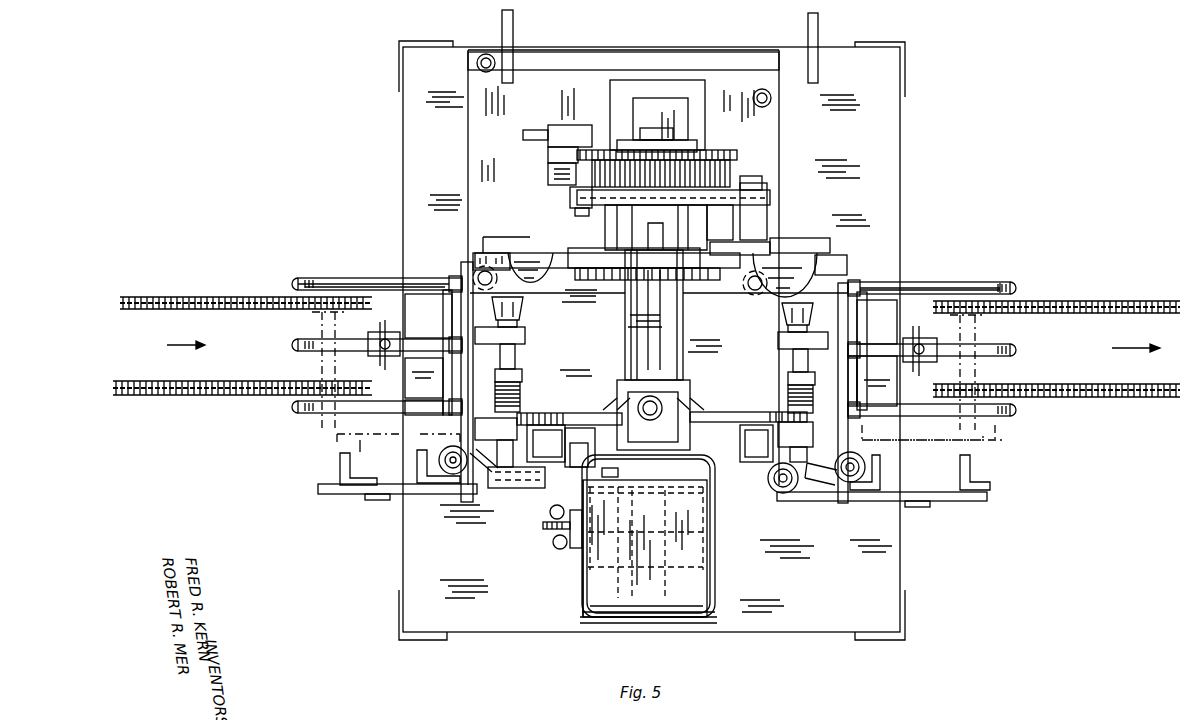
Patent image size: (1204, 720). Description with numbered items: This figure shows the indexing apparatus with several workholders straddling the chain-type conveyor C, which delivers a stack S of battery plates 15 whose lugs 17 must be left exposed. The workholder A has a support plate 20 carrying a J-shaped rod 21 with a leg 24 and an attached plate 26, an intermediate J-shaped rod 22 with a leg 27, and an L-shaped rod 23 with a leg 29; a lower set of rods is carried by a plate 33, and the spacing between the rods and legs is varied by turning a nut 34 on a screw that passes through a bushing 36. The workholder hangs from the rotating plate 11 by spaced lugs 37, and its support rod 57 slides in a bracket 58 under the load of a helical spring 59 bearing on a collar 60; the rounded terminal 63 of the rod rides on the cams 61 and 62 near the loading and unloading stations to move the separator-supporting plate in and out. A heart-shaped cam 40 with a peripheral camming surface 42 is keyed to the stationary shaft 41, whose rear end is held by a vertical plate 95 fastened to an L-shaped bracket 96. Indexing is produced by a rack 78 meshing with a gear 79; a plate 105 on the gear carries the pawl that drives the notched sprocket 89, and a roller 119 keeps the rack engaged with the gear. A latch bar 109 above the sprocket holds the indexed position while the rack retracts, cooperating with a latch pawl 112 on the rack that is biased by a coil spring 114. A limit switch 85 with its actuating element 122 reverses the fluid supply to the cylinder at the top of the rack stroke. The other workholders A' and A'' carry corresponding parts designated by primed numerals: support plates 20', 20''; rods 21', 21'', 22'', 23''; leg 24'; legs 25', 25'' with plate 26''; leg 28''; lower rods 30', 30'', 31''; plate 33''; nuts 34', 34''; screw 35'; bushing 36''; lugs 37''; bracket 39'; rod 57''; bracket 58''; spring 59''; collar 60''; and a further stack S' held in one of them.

The stationary shaft 41 is at (646, 106).
The L-shaped bracket 96 is at (672, 112).
The actuating element 122 is at (523, 132).
The limit switch 85 is at (590, 121).
The vertically extending plate 95 is at (722, 156).
The gear 79 is at (731, 168).
The rack 78 is at (548, 170).
The roller 119 is at (548, 178).
The coil spring 114 is at (570, 197).
The latch pawl 112 is at (577, 216).
The plate 105 is at (748, 176).
The latch bar 109 is at (770, 203).
The sprocket 89 is at (710, 208).
The cam 61 is at (540, 291).
The cam 62 is at (752, 284).
The rounded terminal 63 is at (522, 302).
The bracket 58 is at (519, 331).
The rod 57 is at (533, 353).
The collar 60 is at (530, 369).
The helical spring 59 is at (530, 394).
The lugs 37 is at (495, 427).
The support plate 20 is at (478, 382).
The plate 26 is at (497, 458).
The leg 24 is at (373, 269).
The rod 21 is at (437, 335).
The leg 27 is at (312, 352).
The leg 29 is at (366, 414).
The plate 33 is at (428, 316).
The intermediate rod 22 is at (424, 378).
The bushing 36 is at (398, 345).
The nut 34 is at (366, 348).
The rod 23 is at (424, 416).
The plates 15 is at (322, 428).
The lug 17 is at (330, 446).
The plate 11 is at (565, 413).
The cam 40 is at (594, 413).
The peripheral camming surface 42 is at (735, 428).
The workholder A is at (375, 270).
The conveyor C is at (212, 300).
The stack S is at (983, 372).
The pin S' is at (363, 451).
The center block 20' is at (653, 415).
The upright bar 20'' is at (836, 408).
The bracket 21' is at (664, 548).
The bracket 21'' is at (870, 335).
The block 22'' is at (834, 380).
The rod 23'' is at (914, 406).
The plate 24' is at (664, 548).
The plate 25' is at (565, 515).
The rod 25'' is at (932, 275).
The rod 26'' is at (937, 272).
The rod 28'' is at (932, 339).
The plate 30' is at (648, 639).
The rod end 30'' is at (1027, 283).
The pin 31'' is at (936, 352).
The guide block 33'' is at (879, 340).
The nut 34' is at (546, 535).
The pin 34'' is at (952, 397).
The screw 35' is at (539, 526).
The clamp 36'' is at (919, 341).
The base block 37'' is at (809, 446).
The bracket 39' is at (664, 395).
The rod 57'' is at (778, 354).
The block 58'' is at (786, 326).
The spring 59'' is at (780, 395).
The cap 60'' is at (781, 371).
The workholder A' is at (661, 539).
The workholder A'' is at (930, 272).